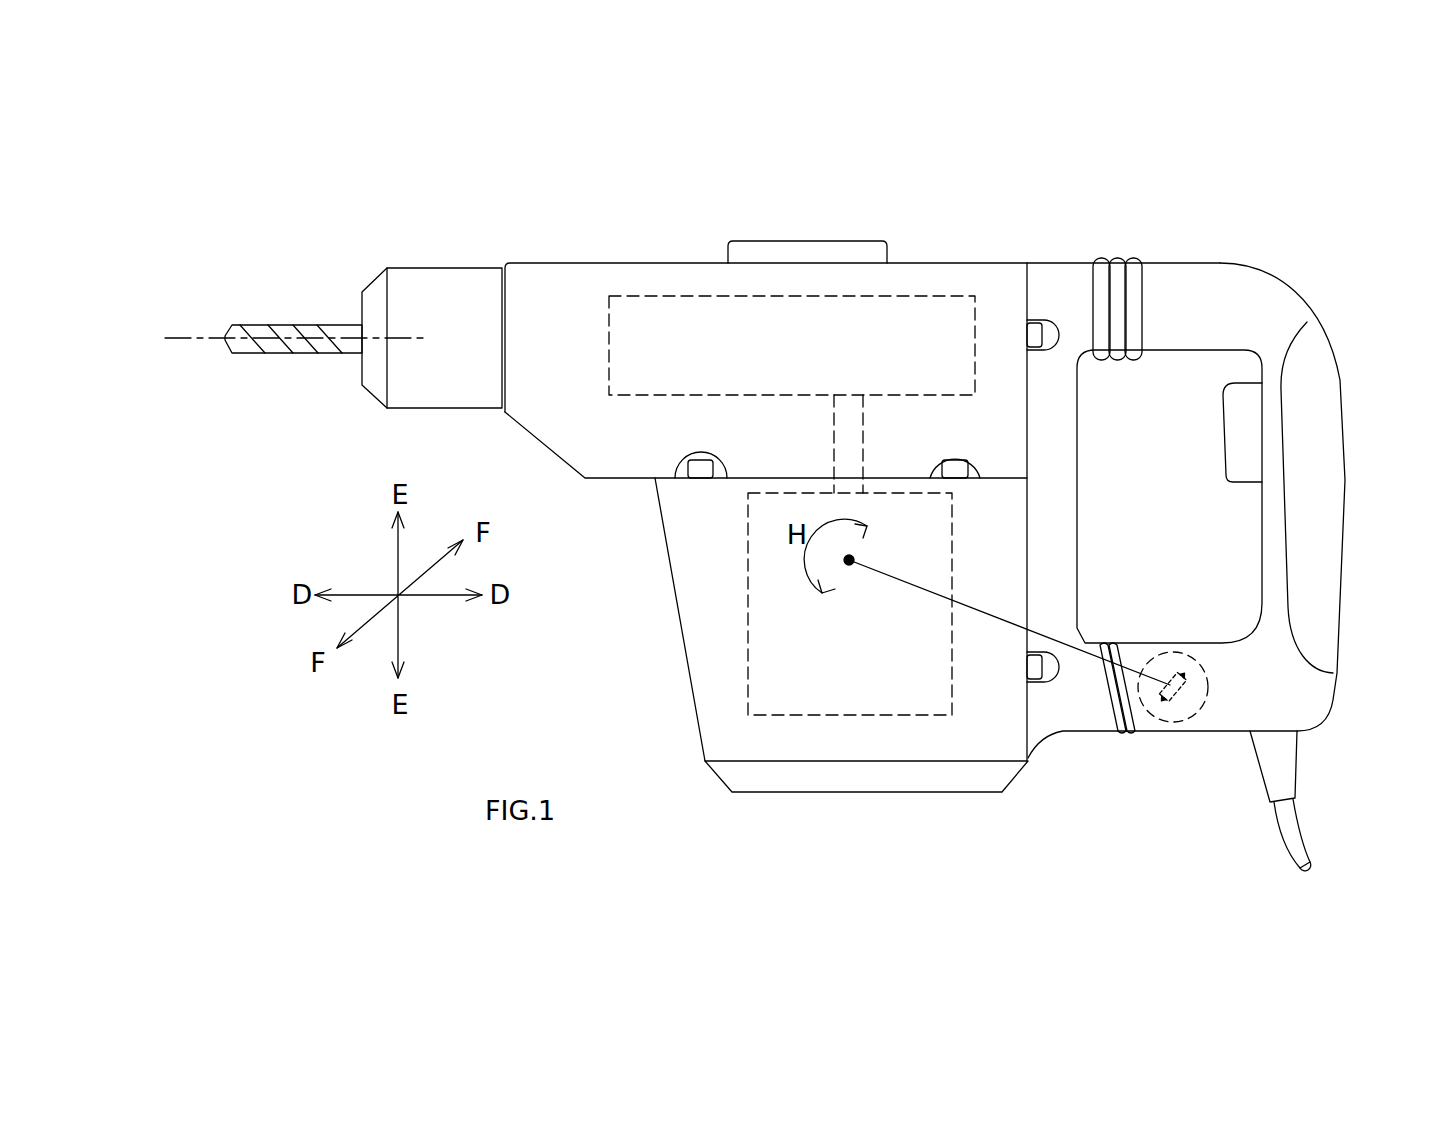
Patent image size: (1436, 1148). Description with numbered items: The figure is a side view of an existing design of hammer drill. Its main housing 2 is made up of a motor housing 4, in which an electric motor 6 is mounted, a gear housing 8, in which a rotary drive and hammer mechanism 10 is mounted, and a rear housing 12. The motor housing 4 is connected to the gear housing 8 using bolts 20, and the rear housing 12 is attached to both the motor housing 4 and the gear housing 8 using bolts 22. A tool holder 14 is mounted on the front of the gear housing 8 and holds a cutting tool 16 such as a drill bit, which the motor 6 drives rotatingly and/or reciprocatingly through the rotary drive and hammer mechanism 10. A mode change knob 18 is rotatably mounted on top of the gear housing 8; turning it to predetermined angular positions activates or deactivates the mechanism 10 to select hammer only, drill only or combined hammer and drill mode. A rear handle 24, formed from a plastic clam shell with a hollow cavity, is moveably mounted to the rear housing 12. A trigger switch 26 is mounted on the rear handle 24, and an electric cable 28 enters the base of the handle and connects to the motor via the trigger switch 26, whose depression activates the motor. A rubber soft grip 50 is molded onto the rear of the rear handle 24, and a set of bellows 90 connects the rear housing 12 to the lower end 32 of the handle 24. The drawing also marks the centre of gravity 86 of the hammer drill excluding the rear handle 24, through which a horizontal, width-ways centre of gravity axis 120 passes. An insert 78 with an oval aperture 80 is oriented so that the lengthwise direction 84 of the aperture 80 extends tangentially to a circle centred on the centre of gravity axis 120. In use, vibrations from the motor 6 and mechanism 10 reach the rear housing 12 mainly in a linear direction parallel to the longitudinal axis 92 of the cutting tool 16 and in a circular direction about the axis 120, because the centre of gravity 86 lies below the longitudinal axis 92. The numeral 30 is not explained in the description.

The main housing 2 is at (600, 213).
The motor housing 4 is at (713, 642).
The electric motor 6 is at (757, 585).
The gear housing 8 is at (520, 293).
The rotary drive and hammer mechanism 10 is at (920, 322).
The rear housing 12 is at (1077, 513).
The tool holder 14 is at (437, 383).
The cutting tool 16 is at (295, 330).
The mode change knob 18 is at (813, 255).
The bolts 20 is at (703, 465).
The bolts 22 is at (1035, 335).
The rear handle 24 is at (1233, 293).
The trigger switch 26 is at (1240, 427).
The electric cable 28 is at (1288, 822).
The cord wrap 30 is at (1157, 293).
The lower end 32 is at (1145, 725).
The rubber soft grip 50 is at (1318, 440).
The insert 78 is at (1193, 700).
The aperture 80 is at (1175, 707).
The length of the aperture 84 is at (1170, 677).
The centre of gravity 86 is at (848, 566).
The bellows 90 is at (1117, 687).
The longitudinal axis 92 is at (185, 338).
The centre of gravity axis 120 is at (875, 592).